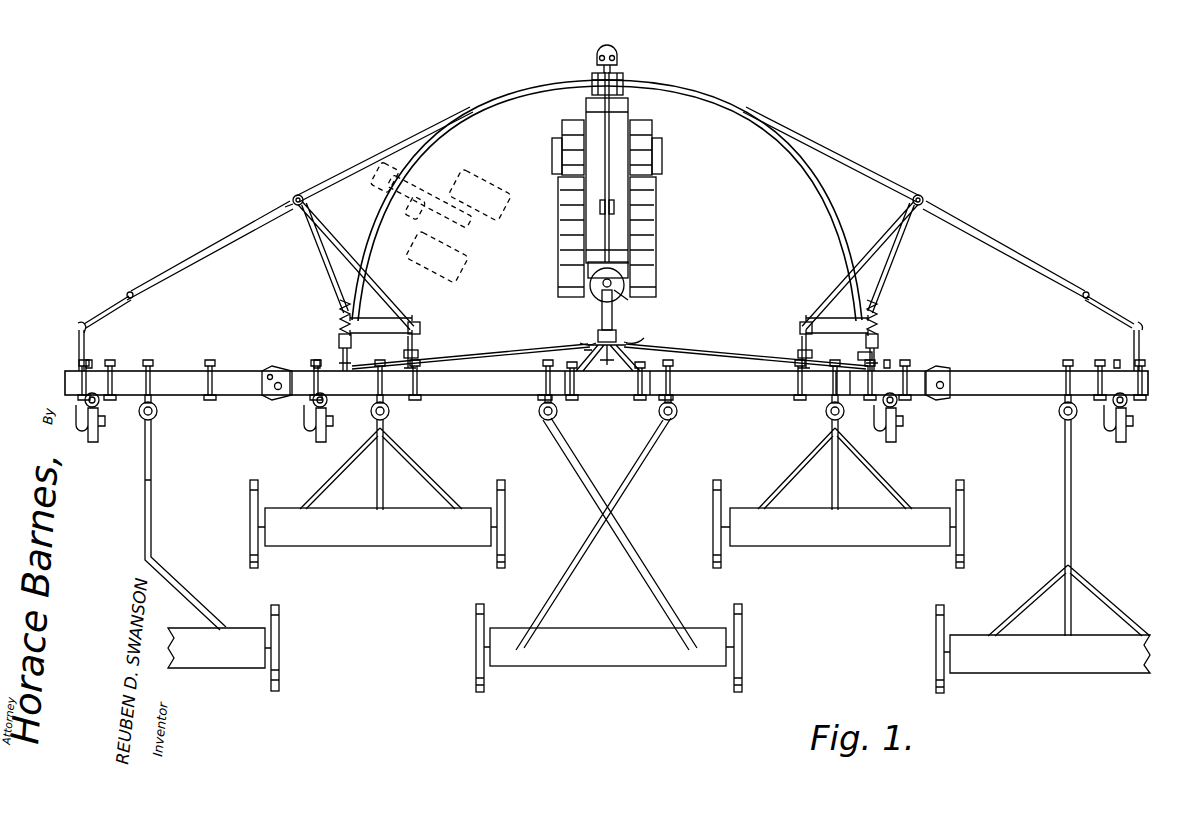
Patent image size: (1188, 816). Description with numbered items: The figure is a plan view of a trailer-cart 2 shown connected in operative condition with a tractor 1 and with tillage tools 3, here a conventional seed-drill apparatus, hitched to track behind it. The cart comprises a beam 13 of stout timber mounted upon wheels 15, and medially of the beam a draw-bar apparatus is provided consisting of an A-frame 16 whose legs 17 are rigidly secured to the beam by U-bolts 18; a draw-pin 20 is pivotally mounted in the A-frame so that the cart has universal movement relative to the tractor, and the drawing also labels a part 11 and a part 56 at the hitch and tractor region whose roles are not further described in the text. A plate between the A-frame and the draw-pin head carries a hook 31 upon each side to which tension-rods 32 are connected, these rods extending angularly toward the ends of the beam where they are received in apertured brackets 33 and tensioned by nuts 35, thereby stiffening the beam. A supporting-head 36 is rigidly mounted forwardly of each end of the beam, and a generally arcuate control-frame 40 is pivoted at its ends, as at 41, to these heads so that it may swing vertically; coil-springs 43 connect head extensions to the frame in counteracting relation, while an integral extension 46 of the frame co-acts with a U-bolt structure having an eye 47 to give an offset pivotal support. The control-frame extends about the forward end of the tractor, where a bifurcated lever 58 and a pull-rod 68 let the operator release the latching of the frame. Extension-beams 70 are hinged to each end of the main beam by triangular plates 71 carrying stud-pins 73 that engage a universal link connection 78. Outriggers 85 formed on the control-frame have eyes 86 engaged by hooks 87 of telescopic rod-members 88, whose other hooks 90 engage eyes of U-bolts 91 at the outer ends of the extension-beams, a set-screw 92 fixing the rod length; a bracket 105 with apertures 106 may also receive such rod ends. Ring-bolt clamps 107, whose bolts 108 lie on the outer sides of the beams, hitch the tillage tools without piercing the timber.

The tractor 1 is at (656, 195).
The trailer-cart 2 is at (607, 383).
The tillage tools 3 is at (647, 555).
The draft link 11 is at (620, 300).
The beam 13 is at (476, 384).
The wheels 15 is at (98, 430).
The A-frame 16 is at (618, 340).
The legs 17 is at (630, 352).
The U-bolts 18 is at (640, 384).
The draw-pin 20 is at (586, 344).
The hook 31 is at (635, 345).
The tension-rods 32 is at (462, 358).
The apertured brackets 33 is at (848, 383).
The nuts 35 is at (875, 356).
The supporting-head 36 is at (338, 345).
The control-frame 40 is at (742, 106).
The pivot 41 is at (378, 335).
The coil-spring 43 is at (338, 326).
The integral extension 46 is at (392, 302).
The eye 47 is at (422, 330).
The disc 56 is at (593, 296).
The bifurcated lever 58 is at (622, 74).
The pull-rod 68 is at (612, 130).
The extension-beams 70 is at (188, 382).
The triangular plates 71 is at (280, 392).
The stud-pin 73 is at (268, 390).
The universal link connection 78 is at (284, 372).
The outriggers 85 is at (325, 175).
The eye 86 is at (292, 196).
The hooks 87 is at (294, 206).
The telescopic rod-members 88 is at (178, 252).
The hooks 90 is at (90, 330).
The U-bolts 91 is at (77, 348).
The set-screw 92 is at (138, 297).
The bracket 105 is at (596, 57).
The apertures 106 is at (607, 50).
The ring-bolt clamps 107 is at (545, 414).
The bolts 108 is at (540, 385).